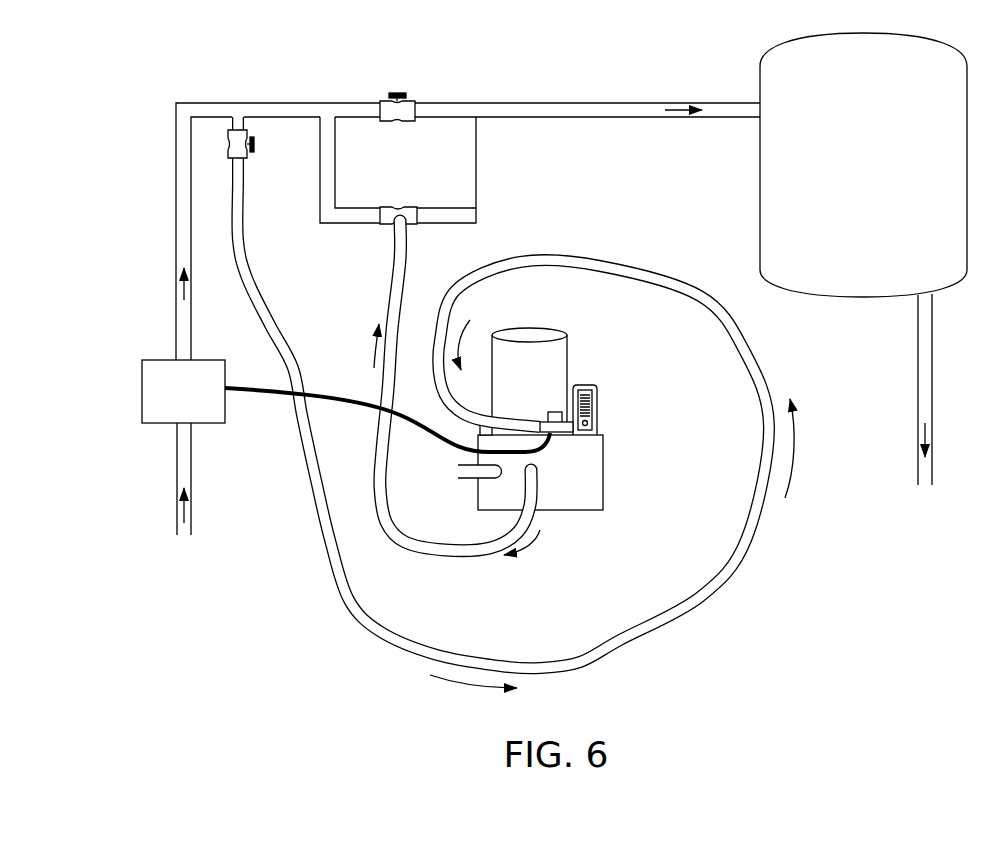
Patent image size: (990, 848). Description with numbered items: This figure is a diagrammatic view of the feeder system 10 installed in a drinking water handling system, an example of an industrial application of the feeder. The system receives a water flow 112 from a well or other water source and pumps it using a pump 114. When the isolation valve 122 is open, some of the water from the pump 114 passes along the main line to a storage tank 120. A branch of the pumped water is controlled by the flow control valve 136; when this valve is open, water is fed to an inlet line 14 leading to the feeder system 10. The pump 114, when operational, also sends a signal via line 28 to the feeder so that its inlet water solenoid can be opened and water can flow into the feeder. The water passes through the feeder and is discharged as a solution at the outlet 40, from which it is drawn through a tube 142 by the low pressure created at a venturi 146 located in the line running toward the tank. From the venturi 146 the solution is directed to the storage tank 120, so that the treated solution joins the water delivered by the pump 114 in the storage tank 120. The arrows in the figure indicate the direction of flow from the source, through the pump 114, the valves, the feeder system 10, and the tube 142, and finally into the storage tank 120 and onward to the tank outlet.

The feeder 10 is at (636, 445).
The inlet line 14 is at (257, 273).
The line 28 is at (262, 393).
The outlet 40 is at (536, 470).
The water flow 112 is at (183, 549).
The pump 114 is at (198, 403).
The storage tank 120 is at (852, 166).
The isolation valve 122 is at (392, 93).
The flow control valve 136 is at (255, 143).
The tube 142 is at (458, 556).
The venturi 146 is at (388, 208).